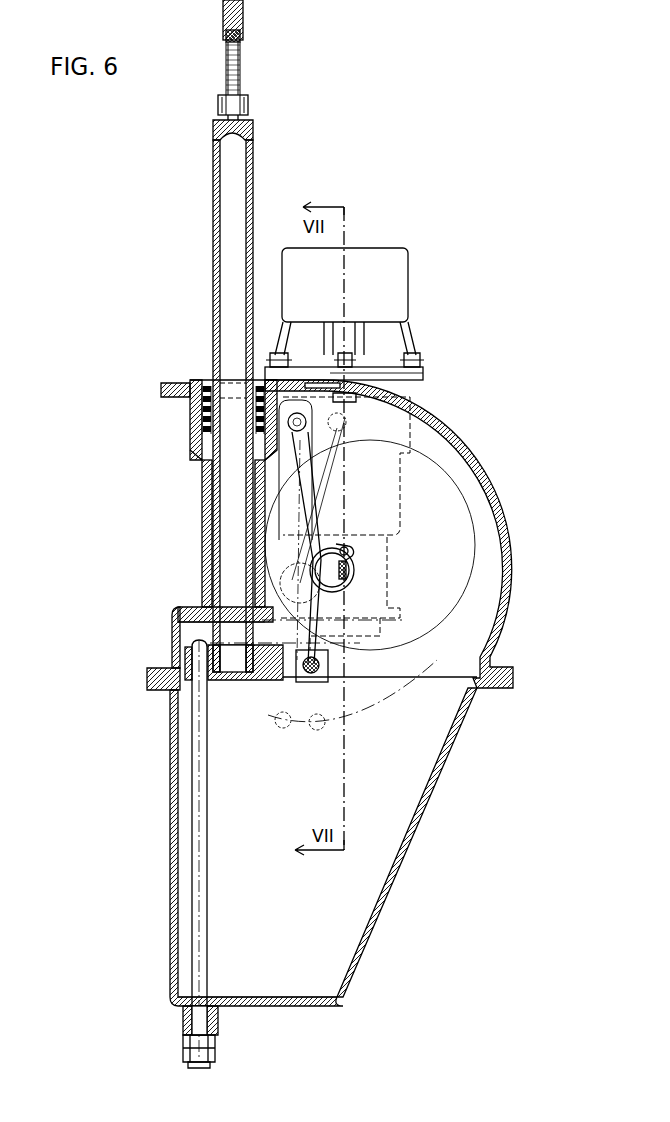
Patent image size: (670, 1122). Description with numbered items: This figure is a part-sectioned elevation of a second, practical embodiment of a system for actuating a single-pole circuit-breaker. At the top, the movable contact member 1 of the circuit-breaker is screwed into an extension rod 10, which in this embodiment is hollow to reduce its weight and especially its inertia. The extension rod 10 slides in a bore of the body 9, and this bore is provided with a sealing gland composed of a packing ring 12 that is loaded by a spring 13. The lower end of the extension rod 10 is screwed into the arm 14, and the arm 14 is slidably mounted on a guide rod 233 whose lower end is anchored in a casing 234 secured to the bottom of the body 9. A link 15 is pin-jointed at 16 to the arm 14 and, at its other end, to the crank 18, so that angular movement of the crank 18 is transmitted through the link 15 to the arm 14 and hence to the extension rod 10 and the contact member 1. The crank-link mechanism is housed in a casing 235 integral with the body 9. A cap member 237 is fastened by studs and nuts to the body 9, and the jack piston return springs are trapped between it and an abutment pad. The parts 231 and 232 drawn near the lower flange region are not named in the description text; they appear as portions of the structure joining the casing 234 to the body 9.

The movable contact member 1 is at (225, 35).
The extension rod 10 is at (214, 285).
The body 9 is at (205, 548).
The spring 13 is at (196, 404).
The packing ring 12 is at (200, 432).
The cap member 237 is at (400, 278).
The casing 235 is at (428, 430).
The crank 18 is at (320, 528).
The link 15 is at (300, 632).
The bracket 231 is at (208, 661).
The lower flange 232 is at (180, 690).
The arm 14 is at (272, 681).
The pin joint 16 is at (312, 682).
The casing 234 is at (172, 770).
The guide rod 233 is at (205, 748).